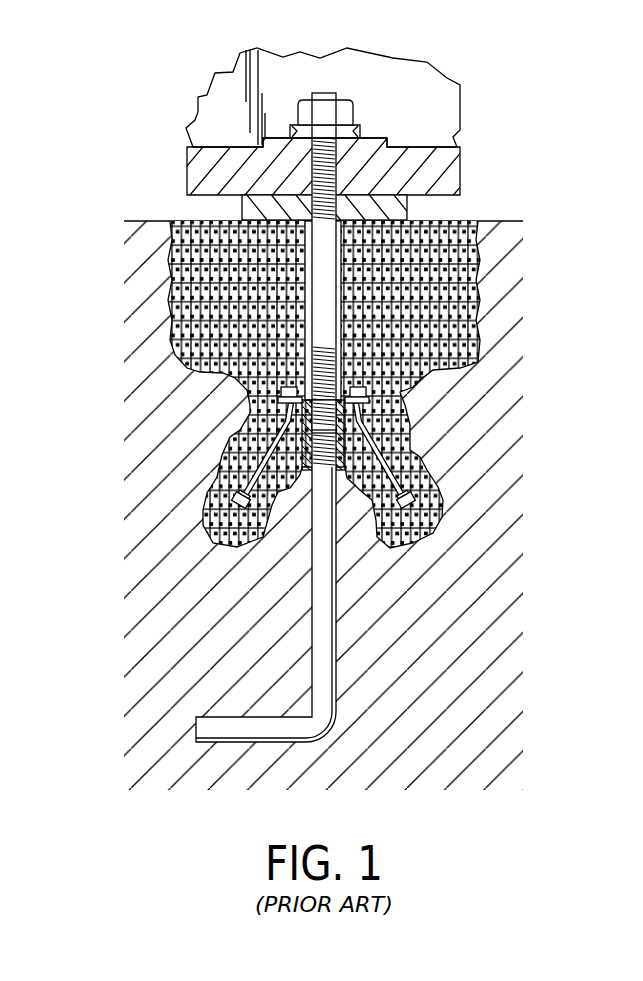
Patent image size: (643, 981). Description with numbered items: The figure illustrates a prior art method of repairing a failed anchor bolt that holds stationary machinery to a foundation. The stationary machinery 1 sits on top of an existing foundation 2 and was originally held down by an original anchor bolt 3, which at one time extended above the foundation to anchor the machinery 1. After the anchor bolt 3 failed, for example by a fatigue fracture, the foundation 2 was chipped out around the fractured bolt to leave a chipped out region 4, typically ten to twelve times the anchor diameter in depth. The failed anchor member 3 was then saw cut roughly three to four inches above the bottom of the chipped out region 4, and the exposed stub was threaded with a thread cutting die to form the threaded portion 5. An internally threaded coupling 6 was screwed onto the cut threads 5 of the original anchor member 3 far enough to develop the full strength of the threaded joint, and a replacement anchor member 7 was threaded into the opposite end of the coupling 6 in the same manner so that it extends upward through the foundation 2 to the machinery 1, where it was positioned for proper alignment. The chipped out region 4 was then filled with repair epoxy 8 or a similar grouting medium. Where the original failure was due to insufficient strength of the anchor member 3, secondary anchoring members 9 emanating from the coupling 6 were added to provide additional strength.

The stationary machinery 1 is at (230, 112).
The existing foundation 2 is at (438, 707).
The original anchor bolt 3 is at (225, 730).
The chipped out region 4 is at (240, 268).
The threaded portion 5 is at (280, 442).
The internally threaded coupling 6 is at (302, 462).
The replacement anchor member 7 is at (327, 252).
The repair epoxy 8 is at (413, 315).
The secondary anchoring members 9 is at (398, 492).